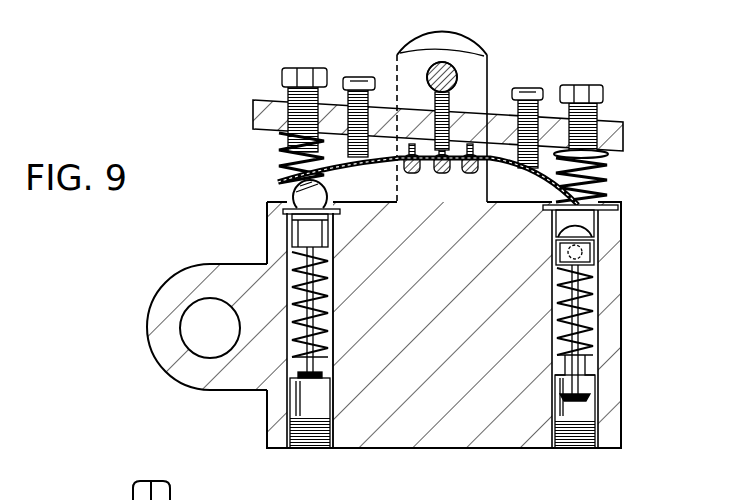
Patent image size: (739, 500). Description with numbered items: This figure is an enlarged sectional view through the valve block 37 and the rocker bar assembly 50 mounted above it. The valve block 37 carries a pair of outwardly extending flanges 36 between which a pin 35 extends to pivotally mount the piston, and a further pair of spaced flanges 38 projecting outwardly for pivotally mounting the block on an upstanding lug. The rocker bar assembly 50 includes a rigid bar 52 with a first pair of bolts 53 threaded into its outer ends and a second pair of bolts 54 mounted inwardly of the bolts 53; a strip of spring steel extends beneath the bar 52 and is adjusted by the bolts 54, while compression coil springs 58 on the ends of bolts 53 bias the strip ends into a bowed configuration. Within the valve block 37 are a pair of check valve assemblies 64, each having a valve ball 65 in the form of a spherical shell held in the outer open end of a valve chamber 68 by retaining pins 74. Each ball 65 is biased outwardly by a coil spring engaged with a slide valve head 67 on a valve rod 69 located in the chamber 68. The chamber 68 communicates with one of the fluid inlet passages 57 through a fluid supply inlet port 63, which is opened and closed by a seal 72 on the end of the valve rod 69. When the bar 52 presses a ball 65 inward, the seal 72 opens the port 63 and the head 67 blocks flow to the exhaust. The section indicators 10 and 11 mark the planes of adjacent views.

The section line 10- 10 is at (307, 62).
The section line 11- 11 is at (575, 72).
The pin 35 is at (455, 68).
The flanges 36 is at (446, 36).
The valve block 37 is at (632, 240).
The flanges 38 is at (173, 353).
The rocker bar assembly 50 is at (614, 118).
The rigid bar 52 is at (624, 130).
The bolts 53 is at (253, 122).
The bolts 54 is at (356, 78).
The fluid inlet passages 57 is at (284, 456).
The compression coil springs 58 is at (600, 175).
The fluid supply inlet port 63 is at (583, 368).
The check valve assemblies 64 is at (346, 252).
The valve ball 65 is at (588, 198).
The slide valve head 67 is at (290, 242).
The valve chamber 68 is at (590, 318).
The valve rod 69 is at (335, 333).
The seal 72 is at (605, 398).
The retaining pins 74 is at (290, 208).